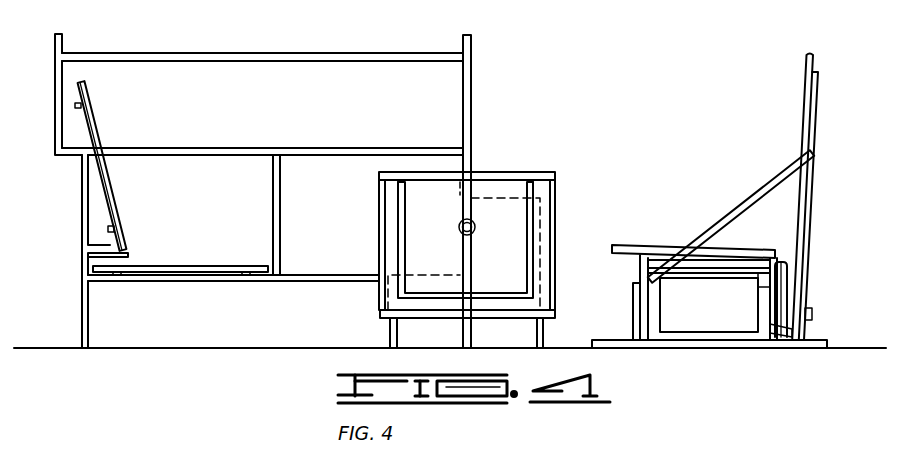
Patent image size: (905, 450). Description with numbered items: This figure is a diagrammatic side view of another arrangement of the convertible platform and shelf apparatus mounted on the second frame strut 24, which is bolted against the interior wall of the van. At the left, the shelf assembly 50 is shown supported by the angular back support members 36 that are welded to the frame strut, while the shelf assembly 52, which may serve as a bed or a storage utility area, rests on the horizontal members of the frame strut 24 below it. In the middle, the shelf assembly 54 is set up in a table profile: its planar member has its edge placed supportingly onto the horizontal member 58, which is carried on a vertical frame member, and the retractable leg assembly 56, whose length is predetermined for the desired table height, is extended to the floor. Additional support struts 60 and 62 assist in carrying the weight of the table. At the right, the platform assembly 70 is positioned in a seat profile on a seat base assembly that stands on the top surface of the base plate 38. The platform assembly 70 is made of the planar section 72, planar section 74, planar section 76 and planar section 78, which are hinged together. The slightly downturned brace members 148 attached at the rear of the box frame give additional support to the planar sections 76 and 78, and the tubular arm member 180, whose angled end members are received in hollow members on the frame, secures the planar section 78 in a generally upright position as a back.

The second frame strut 24 is at (281, 183).
The back support members 36 is at (103, 202).
The base plate 38 is at (823, 340).
The shelf assembly 50 is at (100, 122).
The shelf assembly 52 is at (172, 266).
The shelf assembly 54 is at (474, 239).
The retractable leg assembly 56 is at (467, 258).
The horizontal member 58 is at (496, 317).
The support strut 60 is at (540, 220).
The support strut 62 is at (389, 326).
The platform assembly 70 is at (785, 187).
The planar section 72 is at (633, 301).
The planar section 74 is at (676, 245).
The planar section 76 is at (787, 288).
The planar section 78 is at (803, 93).
The brace members 148 is at (772, 330).
The arm member 180 is at (757, 195).